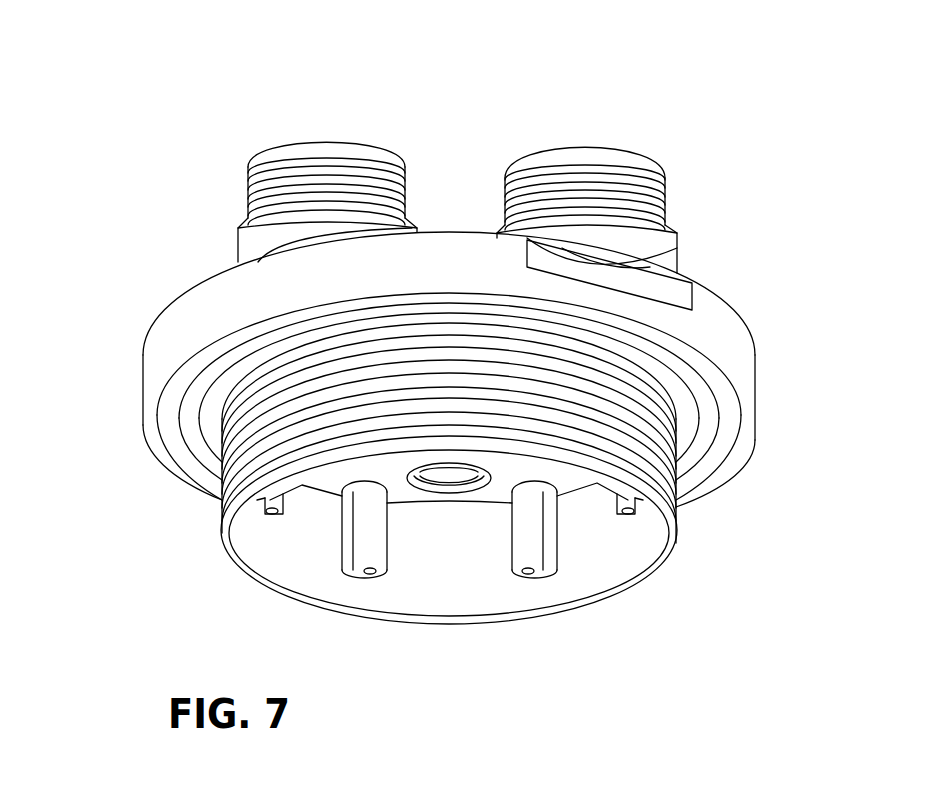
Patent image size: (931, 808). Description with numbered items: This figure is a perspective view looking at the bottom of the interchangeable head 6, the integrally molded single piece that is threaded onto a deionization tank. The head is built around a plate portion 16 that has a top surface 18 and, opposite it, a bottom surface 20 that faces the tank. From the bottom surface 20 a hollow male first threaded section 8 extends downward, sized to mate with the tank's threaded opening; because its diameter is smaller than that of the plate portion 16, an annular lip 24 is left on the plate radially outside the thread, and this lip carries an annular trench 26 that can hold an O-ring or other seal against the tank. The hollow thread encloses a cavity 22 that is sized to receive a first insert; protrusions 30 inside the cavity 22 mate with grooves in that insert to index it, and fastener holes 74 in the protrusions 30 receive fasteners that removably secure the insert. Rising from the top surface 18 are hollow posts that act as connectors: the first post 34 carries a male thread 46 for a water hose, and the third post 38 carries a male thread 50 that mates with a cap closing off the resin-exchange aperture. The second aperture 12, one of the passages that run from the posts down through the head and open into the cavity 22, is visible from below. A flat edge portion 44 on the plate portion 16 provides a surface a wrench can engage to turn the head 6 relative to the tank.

The interchangeable head 6 is at (133, 88).
The first threaded section 8 is at (688, 462).
The second aperture 12 is at (449, 500).
The plate portion 16 is at (158, 357).
The top surface 18 is at (176, 290).
The bottom surface 20 is at (212, 425).
The cavity 22 is at (449, 600).
The annular lip 24 is at (730, 403).
The annular trench 26 is at (707, 420).
The protrusions 30 is at (360, 542).
The first post 34 is at (243, 229).
The third post 38 is at (668, 242).
The flat edge portion 44 is at (655, 284).
The male thread 46 is at (330, 178).
The male thread 50 is at (549, 178).
The fastener holes 74 is at (370, 577).